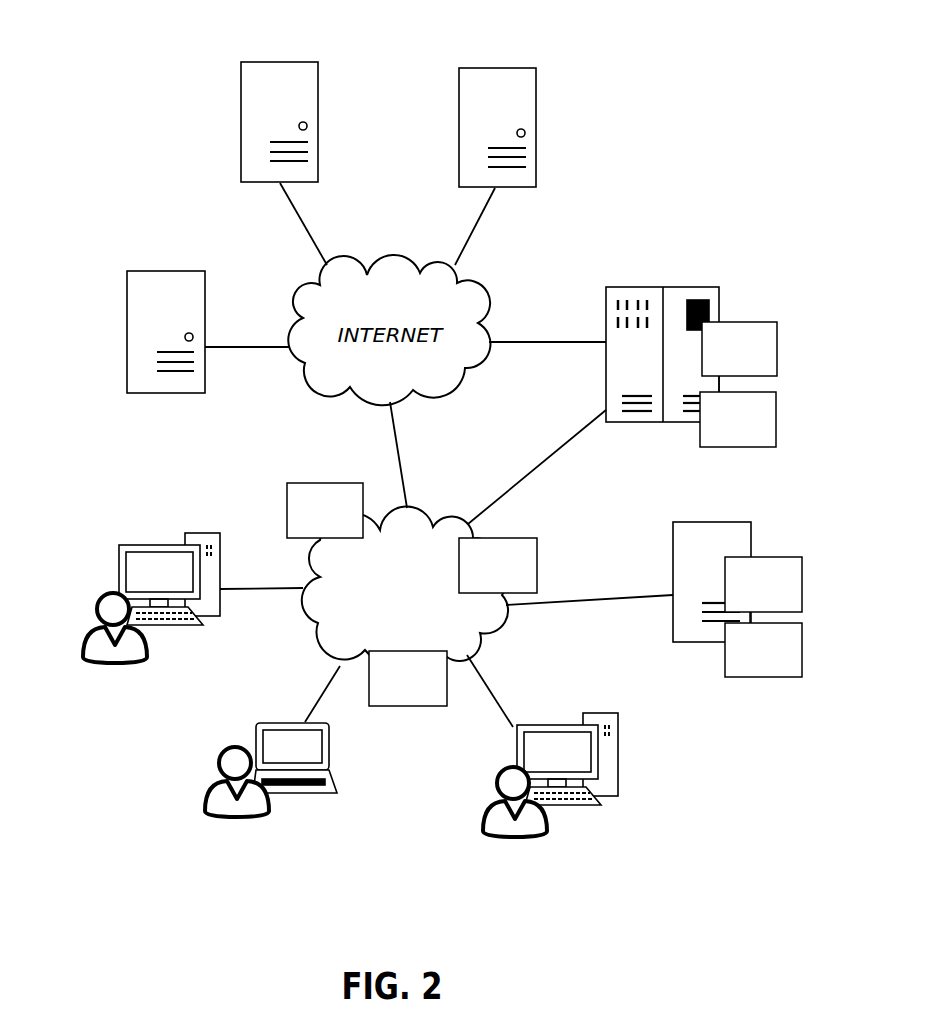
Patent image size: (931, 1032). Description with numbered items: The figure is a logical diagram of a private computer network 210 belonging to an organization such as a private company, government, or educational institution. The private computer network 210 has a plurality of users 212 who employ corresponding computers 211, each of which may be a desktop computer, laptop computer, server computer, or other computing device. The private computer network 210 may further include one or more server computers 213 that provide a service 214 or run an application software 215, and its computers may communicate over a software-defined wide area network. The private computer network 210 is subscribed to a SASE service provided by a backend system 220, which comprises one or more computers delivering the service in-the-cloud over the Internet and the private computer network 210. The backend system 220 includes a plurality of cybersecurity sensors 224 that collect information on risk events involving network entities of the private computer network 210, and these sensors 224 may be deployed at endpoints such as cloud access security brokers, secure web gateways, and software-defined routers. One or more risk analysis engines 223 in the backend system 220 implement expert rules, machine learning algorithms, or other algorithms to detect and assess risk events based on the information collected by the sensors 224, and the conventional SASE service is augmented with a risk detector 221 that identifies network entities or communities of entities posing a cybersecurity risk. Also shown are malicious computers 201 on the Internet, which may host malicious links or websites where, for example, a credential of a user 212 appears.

The malicious computer 201 is at (301, 62).
The private computer network 210 is at (384, 602).
The computer 211 is at (173, 545).
The user 212 is at (122, 665).
The server computer 213 is at (697, 522).
The service 214 is at (745, 663).
The application software 215 is at (745, 598).
The backend system 220 is at (623, 286).
The risk detector 221 is at (720, 432).
The risk analysis engine 223 is at (720, 364).
The cybersecurity sensor 224 is at (307, 524).